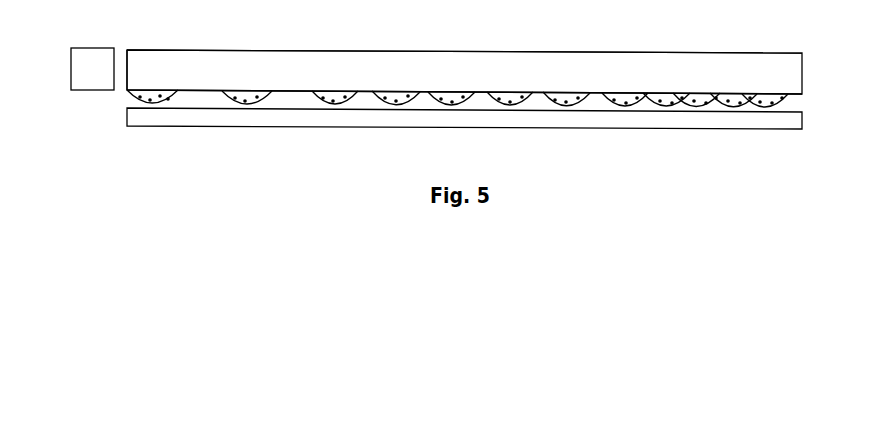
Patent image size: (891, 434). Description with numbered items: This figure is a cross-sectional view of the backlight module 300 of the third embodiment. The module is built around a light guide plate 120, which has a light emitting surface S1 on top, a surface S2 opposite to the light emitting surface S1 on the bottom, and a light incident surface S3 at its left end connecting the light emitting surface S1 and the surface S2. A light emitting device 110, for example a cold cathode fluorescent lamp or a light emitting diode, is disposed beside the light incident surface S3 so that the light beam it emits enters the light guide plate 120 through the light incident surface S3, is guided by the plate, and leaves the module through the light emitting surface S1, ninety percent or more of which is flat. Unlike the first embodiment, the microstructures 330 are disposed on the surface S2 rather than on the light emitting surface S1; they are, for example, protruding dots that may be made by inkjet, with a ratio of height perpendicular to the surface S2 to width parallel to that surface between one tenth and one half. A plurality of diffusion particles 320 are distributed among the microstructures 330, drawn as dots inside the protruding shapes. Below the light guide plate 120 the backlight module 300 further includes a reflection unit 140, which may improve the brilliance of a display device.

The light emitting device 110 is at (85, 77).
The light guide plate 120 is at (778, 77).
The reflection unit 140 is at (783, 122).
The backlight module 300 is at (778, 171).
The diffusion particles 320 is at (454, 114).
The microstructures 330 is at (785, 101).
The light emitting surface S1 is at (784, 41).
The surface S2 is at (793, 96).
The light incident surface S3 is at (126, 79).